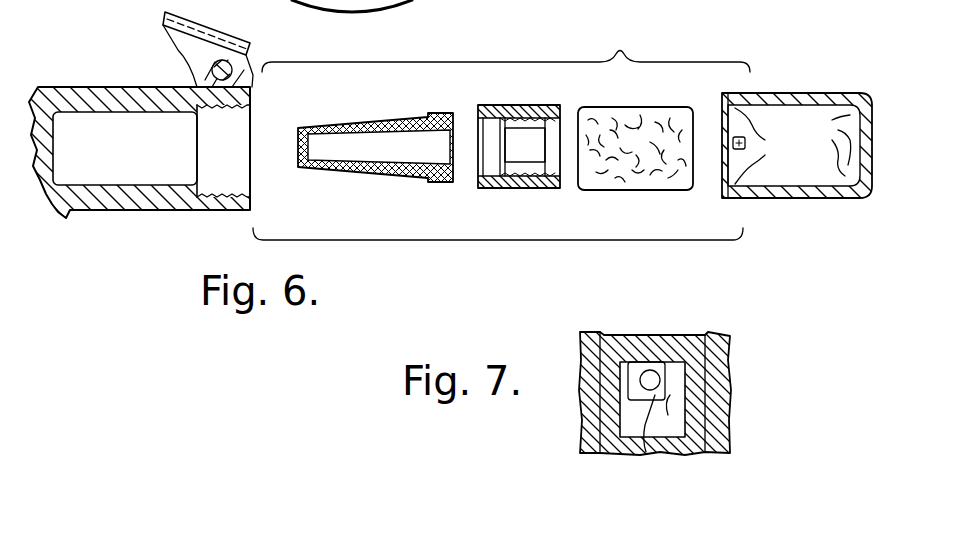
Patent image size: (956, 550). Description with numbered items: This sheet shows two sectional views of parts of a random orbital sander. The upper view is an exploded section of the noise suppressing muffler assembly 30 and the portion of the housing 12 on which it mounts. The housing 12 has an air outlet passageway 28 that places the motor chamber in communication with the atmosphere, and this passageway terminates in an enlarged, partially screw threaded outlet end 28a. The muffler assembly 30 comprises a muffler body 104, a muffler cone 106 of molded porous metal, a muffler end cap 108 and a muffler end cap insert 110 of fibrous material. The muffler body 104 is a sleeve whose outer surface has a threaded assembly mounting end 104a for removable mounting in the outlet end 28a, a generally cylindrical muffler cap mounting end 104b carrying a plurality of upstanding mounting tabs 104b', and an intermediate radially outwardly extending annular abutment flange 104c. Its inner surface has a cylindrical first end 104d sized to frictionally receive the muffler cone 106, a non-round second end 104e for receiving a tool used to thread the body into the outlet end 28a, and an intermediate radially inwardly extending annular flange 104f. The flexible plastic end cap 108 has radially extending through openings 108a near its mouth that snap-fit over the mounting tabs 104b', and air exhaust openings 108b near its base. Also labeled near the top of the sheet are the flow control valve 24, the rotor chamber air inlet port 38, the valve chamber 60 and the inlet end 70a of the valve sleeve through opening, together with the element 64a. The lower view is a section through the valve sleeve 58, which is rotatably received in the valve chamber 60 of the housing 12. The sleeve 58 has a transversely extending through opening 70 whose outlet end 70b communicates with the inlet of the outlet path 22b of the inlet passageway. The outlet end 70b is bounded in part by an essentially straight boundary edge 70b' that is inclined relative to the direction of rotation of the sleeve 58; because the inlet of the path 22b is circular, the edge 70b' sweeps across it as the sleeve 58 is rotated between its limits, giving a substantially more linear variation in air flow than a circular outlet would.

In FIG. 6, the housing 12 is at (72, 216).
In FIG. 6, the air outlet passageway 28 is at (60, 136).
In FIG. 6, the outlet end of air outlet passageway 28a is at (158, 185).
In FIG. 6, the muffler assembly 30 is at (501, 130).
In FIG. 6, the air inlet port 38 is at (374, 0).
In FIG. 6, the flow control valve 24 is at (520, 4).
In FIG. 6, the valve chamber 60 is at (575, 0).
In FIG. 7, the valve chamber 60 is at (697, 335).
In FIG. 6, the inlet end of through opening 70a is at (590, 0).
In FIG. 6, the tab 64a is at (662, 0).
In FIG. 6, the muffler cone 106 is at (352, 125).
In FIG. 6, the muffler body 104 is at (488, 200).
In FIG. 6, the assembly mounting end 104a is at (482, 106).
In FIG. 6, the muffler cap mounting end 104b is at (518, 214).
In FIG. 6, the mounting tabs 104b' is at (603, 209).
In FIG. 6, the annular abutment flange 104c is at (524, 106).
In FIG. 6, the cylindrical first end of inner surface 104d is at (455, 182).
In FIG. 6, the non-round second end of inner surface 104e is at (550, 132).
In FIG. 6, the annular flange 104f is at (478, 138).
In FIG. 6, the muffler end cap 108 is at (818, 93).
In FIG. 6, the through openings 108a is at (745, 143).
In FIG. 6, the air exhaust openings 108b is at (858, 116).
In FIG. 6, the muffler end cap insert 110 is at (667, 190).
In FIG. 7, the through opening 70 is at (712, 394).
In FIG. 7, the outlet end of through opening 70b is at (641, 365).
In FIG. 7, the boundary edge 70b' is at (592, 354).
In FIG. 7, the valve sleeve 58 is at (693, 450).
In FIG. 7, the outlet path 22b is at (630, 453).